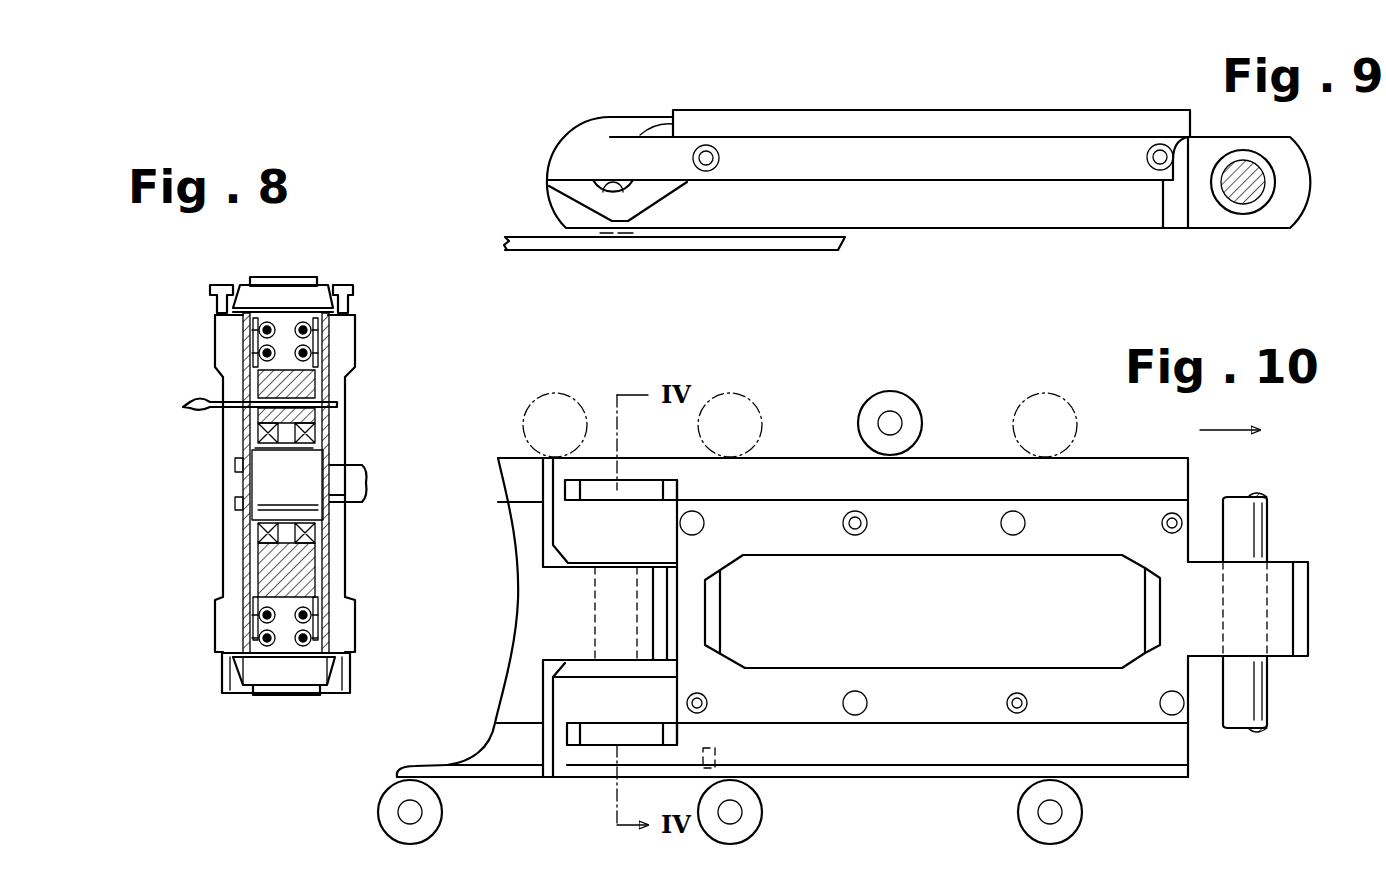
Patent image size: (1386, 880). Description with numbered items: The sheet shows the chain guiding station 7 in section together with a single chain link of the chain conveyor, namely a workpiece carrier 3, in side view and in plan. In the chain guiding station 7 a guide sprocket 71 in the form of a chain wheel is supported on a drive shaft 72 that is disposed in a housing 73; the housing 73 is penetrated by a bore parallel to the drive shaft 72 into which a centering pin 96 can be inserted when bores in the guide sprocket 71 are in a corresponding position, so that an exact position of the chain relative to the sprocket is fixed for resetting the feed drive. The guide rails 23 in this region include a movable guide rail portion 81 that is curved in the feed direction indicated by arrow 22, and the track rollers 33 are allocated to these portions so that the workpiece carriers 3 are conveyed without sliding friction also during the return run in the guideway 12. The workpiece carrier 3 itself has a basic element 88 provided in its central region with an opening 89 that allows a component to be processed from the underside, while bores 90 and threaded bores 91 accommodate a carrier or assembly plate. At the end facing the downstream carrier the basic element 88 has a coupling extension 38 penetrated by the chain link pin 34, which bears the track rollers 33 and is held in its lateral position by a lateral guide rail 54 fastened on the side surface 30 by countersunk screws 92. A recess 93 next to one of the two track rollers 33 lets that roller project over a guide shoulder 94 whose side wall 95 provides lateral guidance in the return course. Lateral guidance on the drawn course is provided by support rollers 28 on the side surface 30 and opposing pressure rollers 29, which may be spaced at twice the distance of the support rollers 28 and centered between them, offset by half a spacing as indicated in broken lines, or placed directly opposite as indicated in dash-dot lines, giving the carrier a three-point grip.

In FIG. 8, the workpiece carrier 3 is at (285, 670).
In FIG. 9, the workpiece carrier 3 is at (868, 98).
In FIG. 10, the workpiece carrier 3 is at (958, 405).
In FIG. 8, the chain guiding station 7 is at (348, 215).
In FIG. 8, the guideway 12 is at (242, 722).
In FIG. 10, the feed direction arrow 22 is at (1270, 425).
In FIG. 9, the guide rail 23 is at (790, 243).
In FIG. 10, the support roller 28 is at (433, 815).
In FIG. 10, the pressure roller 29 is at (560, 395).
In FIG. 10, the side surface 30 is at (1138, 765).
In FIG. 8, the track roller 33 is at (318, 308).
In FIG. 9, the track roller 33 is at (605, 236).
In FIG. 10, the track roller 33 is at (597, 490).
In FIG. 9, the chain link pin 34 is at (617, 193).
In FIG. 10, the chain link pin 34 is at (1240, 530).
In FIG. 10, the coupling extension 38 is at (1245, 590).
In FIG. 9, the lateral guide rail 54 is at (905, 160).
In FIG. 10, the lateral guide rail 54 is at (963, 768).
In FIG. 8, the guide sprocket 71 is at (330, 425).
In FIG. 8, the drive shaft 72 is at (348, 472).
In FIG. 8, the housing 73 is at (240, 593).
In FIG. 8, the movable guide rail portion 81 is at (245, 342).
In FIG. 9, the basic element 88 is at (1013, 203).
In FIG. 10, the basic element 88 is at (800, 695).
In FIG. 10, the opening 89 is at (1080, 660).
In FIG. 10, the bore 90 is at (697, 520).
In FIG. 10, the threaded bore 91 is at (855, 520).
In FIG. 10, the countersunk screw 92 is at (715, 757).
In FIG. 10, the recess 93 is at (570, 486).
In FIG. 9, the guide shoulder 94 is at (655, 122).
In FIG. 8, the side wall 95 is at (322, 695).
In FIG. 9, the side wall 95 is at (752, 124).
In FIG. 10, the side wall 95 is at (950, 500).
In FIG. 8, the centering pin 96 is at (190, 408).